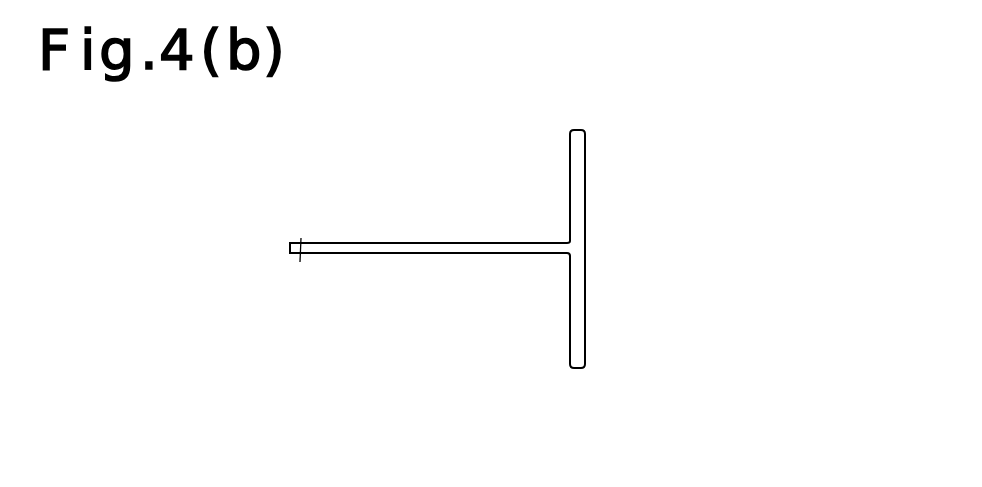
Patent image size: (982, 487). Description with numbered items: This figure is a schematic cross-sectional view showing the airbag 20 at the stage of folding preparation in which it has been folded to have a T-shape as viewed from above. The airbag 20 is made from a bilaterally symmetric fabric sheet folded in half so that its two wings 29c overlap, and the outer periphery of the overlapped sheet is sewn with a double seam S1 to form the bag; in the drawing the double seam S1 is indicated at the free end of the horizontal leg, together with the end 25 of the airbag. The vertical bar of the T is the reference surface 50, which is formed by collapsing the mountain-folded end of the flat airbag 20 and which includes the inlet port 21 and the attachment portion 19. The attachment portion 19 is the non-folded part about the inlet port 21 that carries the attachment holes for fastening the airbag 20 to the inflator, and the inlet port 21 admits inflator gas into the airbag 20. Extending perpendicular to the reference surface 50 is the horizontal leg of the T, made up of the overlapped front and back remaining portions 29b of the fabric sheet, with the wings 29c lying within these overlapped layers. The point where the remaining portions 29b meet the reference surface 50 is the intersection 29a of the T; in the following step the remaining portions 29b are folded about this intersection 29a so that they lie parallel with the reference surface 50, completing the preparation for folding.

The airbag 20 is at (587, 147).
The reference surface 50 is at (587, 180).
The attachment portion 19 is at (587, 237).
The inlet port 21 is at (587, 260).
The intersection of the T 29a is at (568, 242).
The remaining portions 29b is at (375, 283).
The wings 29c is at (448, 243).
The double seam S1 is at (302, 240).
The branch plate tip end 25 is at (294, 255).